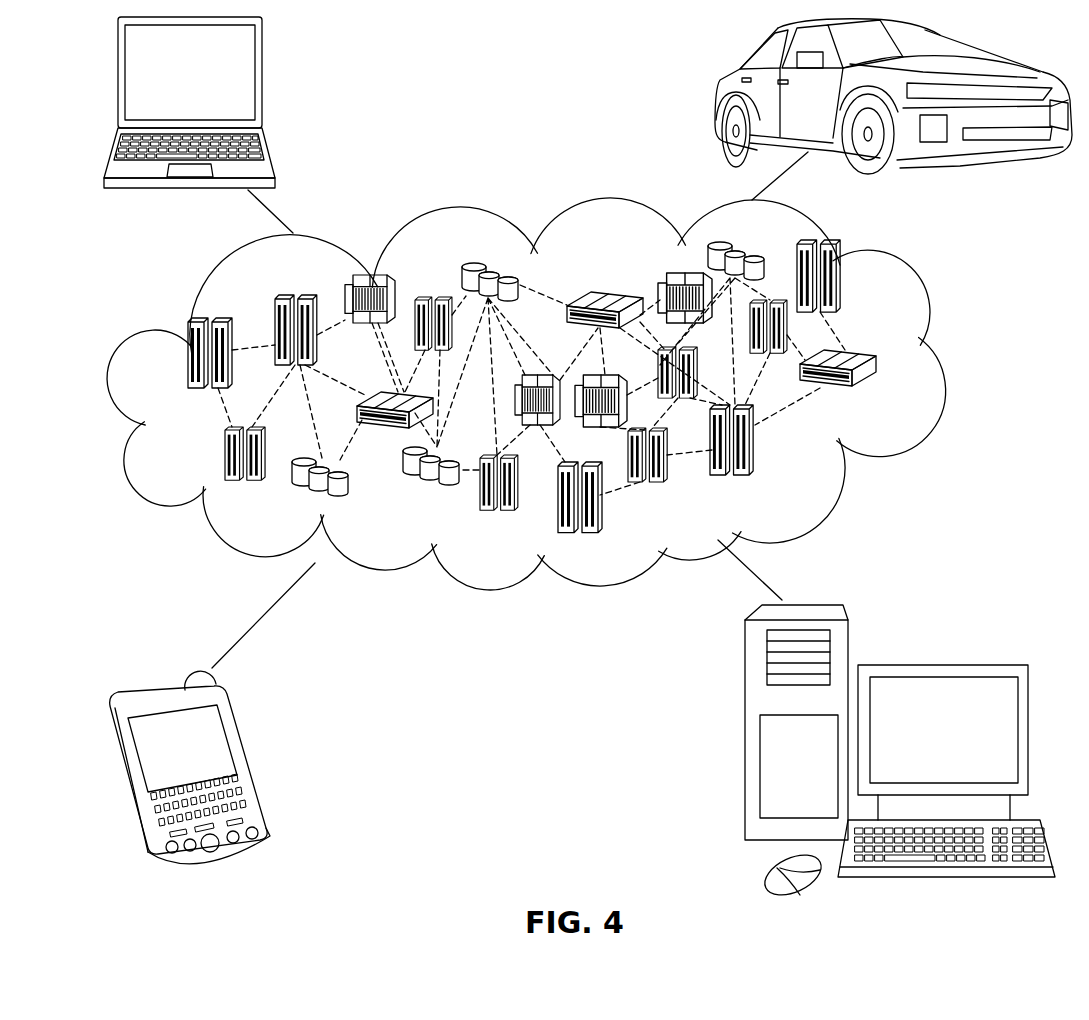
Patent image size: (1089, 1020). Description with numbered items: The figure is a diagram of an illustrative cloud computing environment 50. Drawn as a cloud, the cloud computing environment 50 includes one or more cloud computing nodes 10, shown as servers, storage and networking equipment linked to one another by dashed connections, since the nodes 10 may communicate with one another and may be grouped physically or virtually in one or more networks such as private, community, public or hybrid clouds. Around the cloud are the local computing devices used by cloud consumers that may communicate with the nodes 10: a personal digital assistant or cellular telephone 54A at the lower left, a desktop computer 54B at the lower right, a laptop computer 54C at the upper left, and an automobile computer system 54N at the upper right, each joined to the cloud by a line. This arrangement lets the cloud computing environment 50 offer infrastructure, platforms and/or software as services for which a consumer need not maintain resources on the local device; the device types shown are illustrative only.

The cloud computing node 10 is at (882, 397).
The cloud computing environment 50 is at (942, 363).
The personal digital assistant or cellular telephone 54A is at (250, 760).
The desktop computer 54B is at (940, 664).
The laptop computer 54C is at (262, 82).
The automobile computer system 54N is at (716, 100).